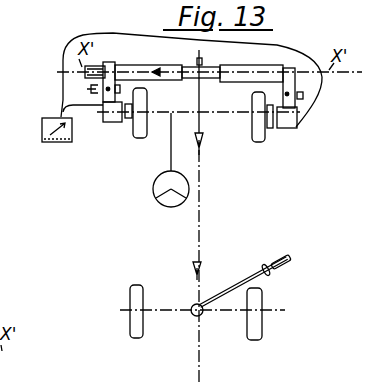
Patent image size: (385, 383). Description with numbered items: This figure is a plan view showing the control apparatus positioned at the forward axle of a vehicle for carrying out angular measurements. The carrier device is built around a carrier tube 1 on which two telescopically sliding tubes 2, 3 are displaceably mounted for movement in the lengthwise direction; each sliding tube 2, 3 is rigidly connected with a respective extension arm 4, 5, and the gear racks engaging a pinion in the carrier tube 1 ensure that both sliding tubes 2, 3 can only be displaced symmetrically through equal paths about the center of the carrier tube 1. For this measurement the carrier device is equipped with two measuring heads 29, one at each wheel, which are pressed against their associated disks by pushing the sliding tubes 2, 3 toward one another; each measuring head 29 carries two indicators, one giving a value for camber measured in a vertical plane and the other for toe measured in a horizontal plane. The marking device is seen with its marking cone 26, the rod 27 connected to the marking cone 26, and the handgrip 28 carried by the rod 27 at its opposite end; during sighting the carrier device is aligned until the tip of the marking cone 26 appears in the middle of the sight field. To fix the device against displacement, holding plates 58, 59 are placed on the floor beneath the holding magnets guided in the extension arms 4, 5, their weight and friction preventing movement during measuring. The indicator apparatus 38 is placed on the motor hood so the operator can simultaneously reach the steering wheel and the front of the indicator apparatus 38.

The carrier tube 1 is at (213, 79).
The sliding tube 2 is at (237, 82).
The sliding tube 3 is at (167, 80).
The extension arm 4 is at (300, 78).
The extension arm 5 is at (110, 66).
The marking cone 26 is at (193, 306).
The rod 27 is at (235, 288).
The handgrip 28 is at (279, 257).
The measuring head 29 is at (113, 122).
The indicator apparatus 38 is at (42, 130).
The holding plate 58 is at (93, 91).
The holding plate 59 is at (300, 100).